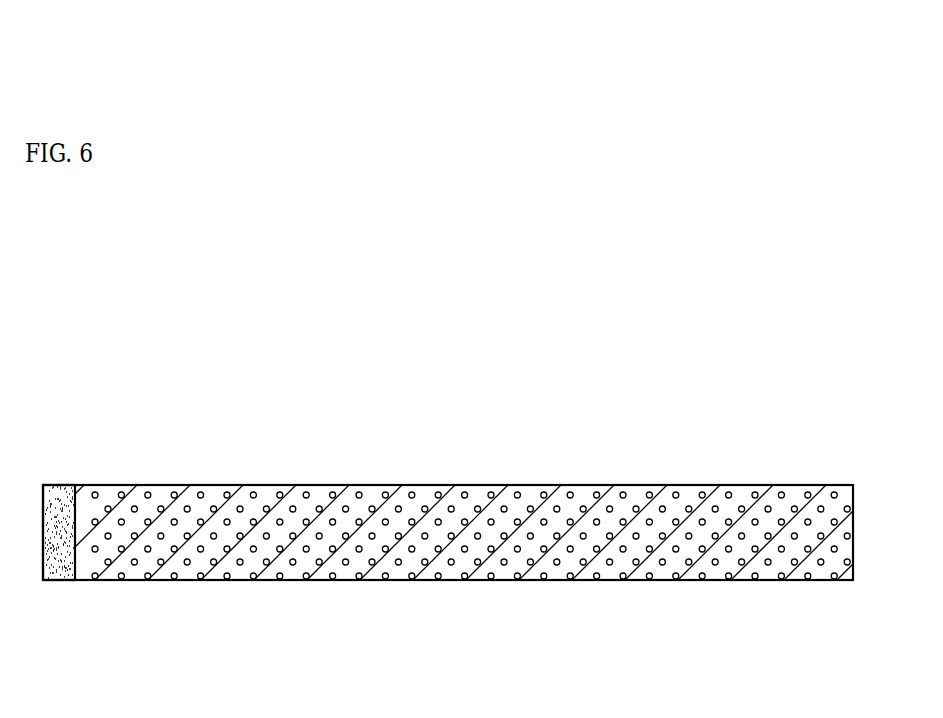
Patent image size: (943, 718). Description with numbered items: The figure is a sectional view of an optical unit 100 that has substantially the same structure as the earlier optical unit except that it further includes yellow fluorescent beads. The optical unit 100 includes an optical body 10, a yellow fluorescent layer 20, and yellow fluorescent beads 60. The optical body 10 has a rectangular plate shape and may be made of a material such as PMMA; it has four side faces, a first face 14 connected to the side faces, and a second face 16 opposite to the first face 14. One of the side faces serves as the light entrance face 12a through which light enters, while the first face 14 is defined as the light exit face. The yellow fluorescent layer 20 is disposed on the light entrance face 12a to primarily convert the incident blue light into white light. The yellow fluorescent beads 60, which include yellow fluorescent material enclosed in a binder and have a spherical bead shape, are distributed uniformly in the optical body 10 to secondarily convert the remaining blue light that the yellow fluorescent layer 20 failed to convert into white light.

The optical unit 100 is at (466, 464).
The optical body 10 is at (624, 464).
The light entrance face 12a is at (77, 512).
The first face 14 is at (267, 485).
The second face 16 is at (450, 580).
The yellow fluorescent layer 20 is at (62, 567).
The yellow fluorescent beads 60 is at (464, 492).